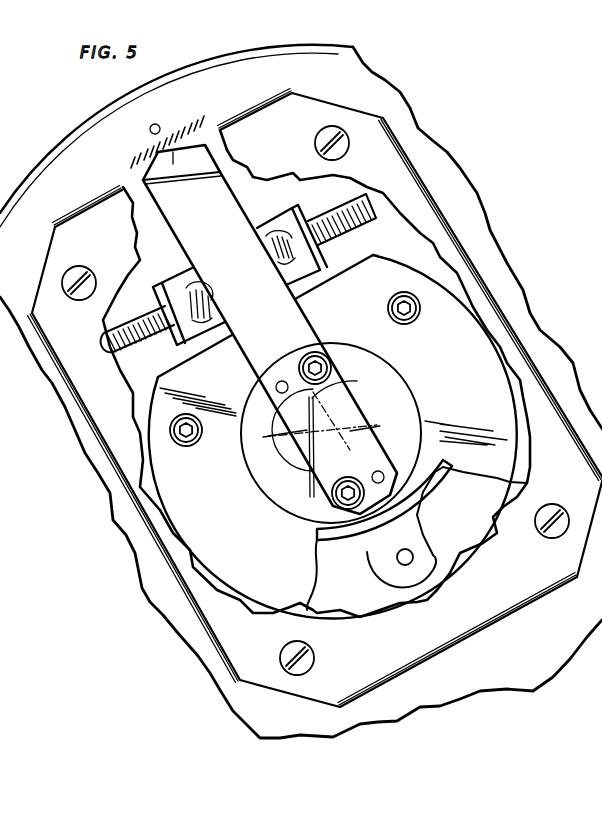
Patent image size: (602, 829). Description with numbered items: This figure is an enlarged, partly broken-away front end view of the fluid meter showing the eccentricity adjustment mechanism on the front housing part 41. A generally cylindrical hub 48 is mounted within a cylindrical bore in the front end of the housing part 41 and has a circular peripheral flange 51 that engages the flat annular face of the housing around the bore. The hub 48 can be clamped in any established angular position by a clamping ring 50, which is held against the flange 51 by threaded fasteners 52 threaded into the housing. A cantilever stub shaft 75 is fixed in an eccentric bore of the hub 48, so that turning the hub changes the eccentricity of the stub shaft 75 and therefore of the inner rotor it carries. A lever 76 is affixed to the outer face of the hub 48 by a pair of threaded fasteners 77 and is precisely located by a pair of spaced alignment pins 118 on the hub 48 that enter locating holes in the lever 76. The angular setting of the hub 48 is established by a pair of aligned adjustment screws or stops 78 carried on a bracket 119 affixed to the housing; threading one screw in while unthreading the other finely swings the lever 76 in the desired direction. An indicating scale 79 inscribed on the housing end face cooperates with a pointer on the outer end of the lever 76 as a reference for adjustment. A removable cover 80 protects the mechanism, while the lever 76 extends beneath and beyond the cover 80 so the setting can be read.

The front housing part 41 is at (328, 50).
The hub 48 is at (414, 414).
The clamping ring 50 is at (480, 391).
The circular peripheral flange 51 is at (433, 468).
The threaded fasteners 52 is at (421, 312).
The stub shaft 75 is at (293, 453).
The lever 76 is at (259, 338).
The threaded fasteners 77 is at (317, 351).
The adjustment screws 78 is at (365, 191).
The indicating scale 79 is at (176, 122).
The removable cover 80 is at (415, 192).
The alignment pins 118 is at (276, 386).
The bracket 119 is at (285, 222).